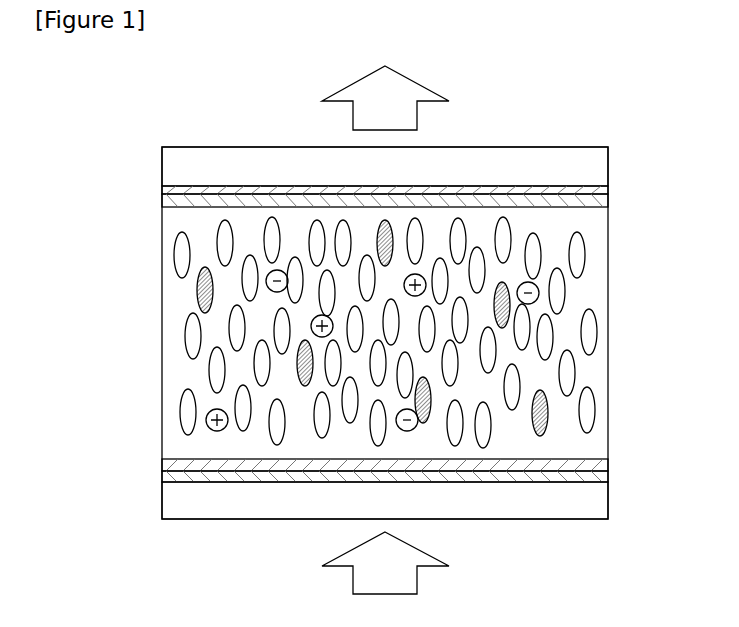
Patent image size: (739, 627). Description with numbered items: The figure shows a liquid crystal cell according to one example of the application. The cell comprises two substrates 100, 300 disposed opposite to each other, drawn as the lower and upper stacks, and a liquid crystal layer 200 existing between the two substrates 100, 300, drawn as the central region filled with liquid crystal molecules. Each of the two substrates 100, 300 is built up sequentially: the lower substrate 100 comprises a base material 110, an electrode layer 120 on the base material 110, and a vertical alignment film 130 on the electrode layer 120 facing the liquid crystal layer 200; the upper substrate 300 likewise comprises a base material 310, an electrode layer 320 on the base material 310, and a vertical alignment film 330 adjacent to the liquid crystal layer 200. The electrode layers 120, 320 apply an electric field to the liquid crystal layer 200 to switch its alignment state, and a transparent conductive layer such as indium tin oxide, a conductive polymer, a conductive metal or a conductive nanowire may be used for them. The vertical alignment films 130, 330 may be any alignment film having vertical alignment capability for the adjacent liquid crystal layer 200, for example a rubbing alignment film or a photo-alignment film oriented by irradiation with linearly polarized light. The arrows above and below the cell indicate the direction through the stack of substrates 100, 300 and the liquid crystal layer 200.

The substrate 100 is at (93, 455).
The base material 110 is at (162, 500).
The electrode layer 120 is at (162, 481).
The vertical alignment film 130 is at (162, 465).
The liquid crystal layer 200 is at (160, 207).
The substrate 300 is at (93, 155).
The base material 310 is at (162, 163).
The electrode layer 320 is at (162, 188).
The vertical alignment film 330 is at (162, 201).